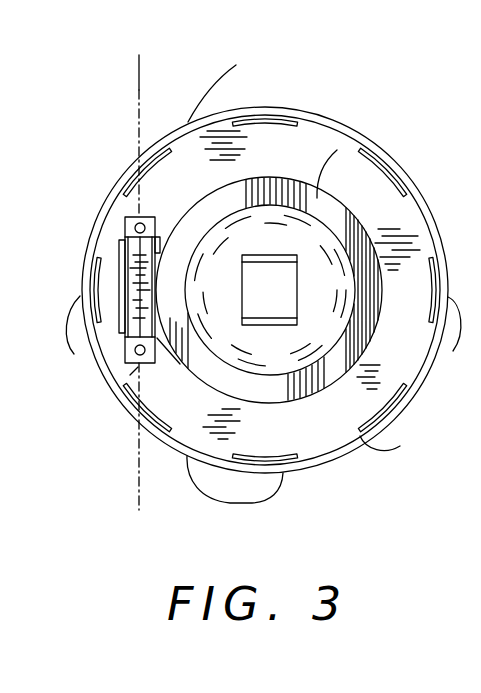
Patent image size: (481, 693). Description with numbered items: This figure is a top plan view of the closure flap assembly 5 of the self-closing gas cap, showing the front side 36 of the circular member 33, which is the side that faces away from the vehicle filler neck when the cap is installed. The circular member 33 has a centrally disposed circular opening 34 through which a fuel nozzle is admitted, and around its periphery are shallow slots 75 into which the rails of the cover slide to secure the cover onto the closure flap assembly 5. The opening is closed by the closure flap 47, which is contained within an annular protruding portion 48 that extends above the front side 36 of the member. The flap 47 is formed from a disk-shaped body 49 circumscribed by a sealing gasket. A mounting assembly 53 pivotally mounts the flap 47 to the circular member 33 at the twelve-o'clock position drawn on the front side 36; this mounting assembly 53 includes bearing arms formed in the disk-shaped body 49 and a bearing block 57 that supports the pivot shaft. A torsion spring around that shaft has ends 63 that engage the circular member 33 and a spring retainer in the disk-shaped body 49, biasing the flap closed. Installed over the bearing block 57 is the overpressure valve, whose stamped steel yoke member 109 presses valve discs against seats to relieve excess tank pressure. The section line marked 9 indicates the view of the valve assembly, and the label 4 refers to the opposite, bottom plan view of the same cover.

The closure flap assembly 5 is at (160, 64).
The section line 9- 9 is at (143, 67).
The circular opening 34 is at (214, 232).
The closure flap 47 is at (250, 239).
The front side 36 is at (299, 160).
The circular member 33 is at (340, 195).
The annular protruding portion 48 is at (318, 198).
The peripheral slots 75 is at (244, 108).
The bearing block 57 is at (113, 261).
The mounting assembly 53 is at (90, 236).
The yoke member 109 is at (134, 283).
The disk-shaped body 49 is at (222, 341).
The spring end 63 is at (471, 204).
The housing 4 is at (474, 286).